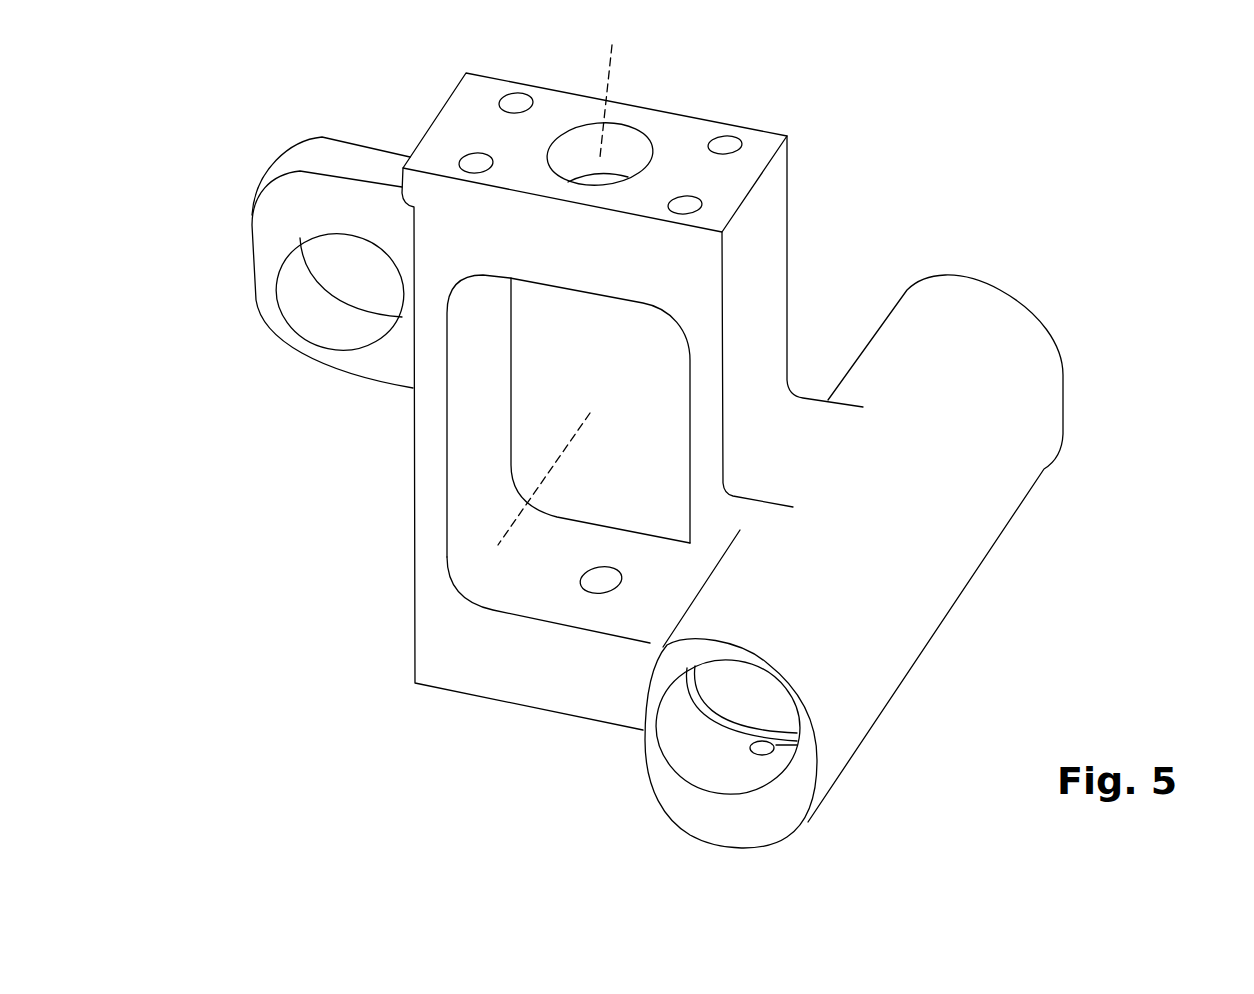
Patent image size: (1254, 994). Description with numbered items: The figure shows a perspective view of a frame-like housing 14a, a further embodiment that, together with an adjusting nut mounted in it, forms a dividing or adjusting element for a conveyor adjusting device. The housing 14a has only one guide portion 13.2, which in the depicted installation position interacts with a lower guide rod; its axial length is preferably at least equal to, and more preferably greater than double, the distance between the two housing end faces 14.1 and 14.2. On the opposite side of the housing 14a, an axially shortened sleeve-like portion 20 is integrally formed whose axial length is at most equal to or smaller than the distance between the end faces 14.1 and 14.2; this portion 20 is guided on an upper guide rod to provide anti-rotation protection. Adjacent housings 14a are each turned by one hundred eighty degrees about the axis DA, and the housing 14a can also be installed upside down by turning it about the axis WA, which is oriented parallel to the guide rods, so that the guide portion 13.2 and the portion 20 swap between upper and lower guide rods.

The frame-like housing 14a is at (852, 192).
The housing end face 14.1 is at (793, 158).
The housing end face 14.2 is at (442, 668).
The guide portion 13.2 is at (1010, 390).
The sleeve-like portion 20 is at (250, 283).
The axis DA is at (607, 98).
The axis WA is at (567, 448).